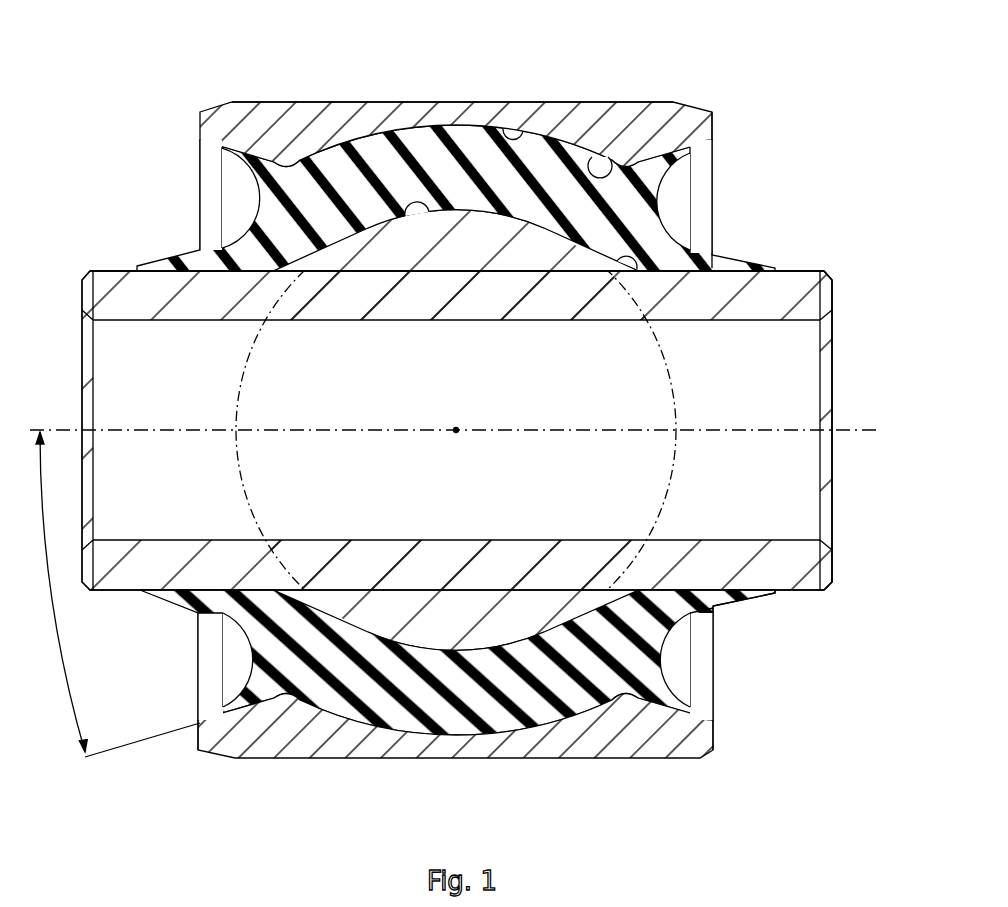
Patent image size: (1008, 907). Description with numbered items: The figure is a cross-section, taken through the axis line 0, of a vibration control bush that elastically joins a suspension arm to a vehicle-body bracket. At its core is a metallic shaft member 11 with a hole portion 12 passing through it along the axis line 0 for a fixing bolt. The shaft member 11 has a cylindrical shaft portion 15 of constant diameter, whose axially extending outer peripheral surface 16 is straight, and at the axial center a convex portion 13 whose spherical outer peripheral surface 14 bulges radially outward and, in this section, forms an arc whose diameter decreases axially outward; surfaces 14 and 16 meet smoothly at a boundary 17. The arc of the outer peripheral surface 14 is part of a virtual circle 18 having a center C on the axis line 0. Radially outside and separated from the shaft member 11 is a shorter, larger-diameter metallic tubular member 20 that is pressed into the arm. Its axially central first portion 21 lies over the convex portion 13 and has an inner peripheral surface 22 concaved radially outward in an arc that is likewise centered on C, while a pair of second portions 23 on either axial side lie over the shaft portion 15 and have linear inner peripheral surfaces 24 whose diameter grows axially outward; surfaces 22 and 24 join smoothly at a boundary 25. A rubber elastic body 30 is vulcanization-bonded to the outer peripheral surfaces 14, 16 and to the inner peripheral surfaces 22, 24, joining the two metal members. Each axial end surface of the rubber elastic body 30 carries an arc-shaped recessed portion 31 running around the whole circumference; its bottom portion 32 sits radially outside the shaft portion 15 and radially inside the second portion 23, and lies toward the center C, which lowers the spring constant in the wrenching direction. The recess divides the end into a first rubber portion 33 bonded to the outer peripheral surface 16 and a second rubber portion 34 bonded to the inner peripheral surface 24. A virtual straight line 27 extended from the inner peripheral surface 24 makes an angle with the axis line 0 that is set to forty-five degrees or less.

The axis line 0 is at (874, 428).
The shaft member 11 is at (472, 421).
The hole portion 12 is at (793, 540).
The convex portion 13 is at (463, 247).
The outer peripheral surface 14 is at (410, 216).
The shaft portion 15 is at (202, 300).
The outer peripheral surface 16 is at (772, 267).
The boundary 17 is at (630, 270).
The virtual circle 18 is at (245, 500).
The tubular member 20 is at (466, 148).
The first portion 21 is at (447, 115).
The inner peripheral surface 22 is at (516, 124).
The second portion 23 is at (240, 118).
The inner peripheral surface 24 is at (692, 147).
The boundary 25 is at (598, 158).
The virtual straight line 27 is at (130, 744).
The rubber elastic body 30 is at (476, 648).
The recessed portion 31 is at (695, 613).
The bottom portion 32 is at (680, 665).
The first rubber portion 33 is at (713, 597).
The second rubber portion 34 is at (685, 720).
The center C is at (456, 432).